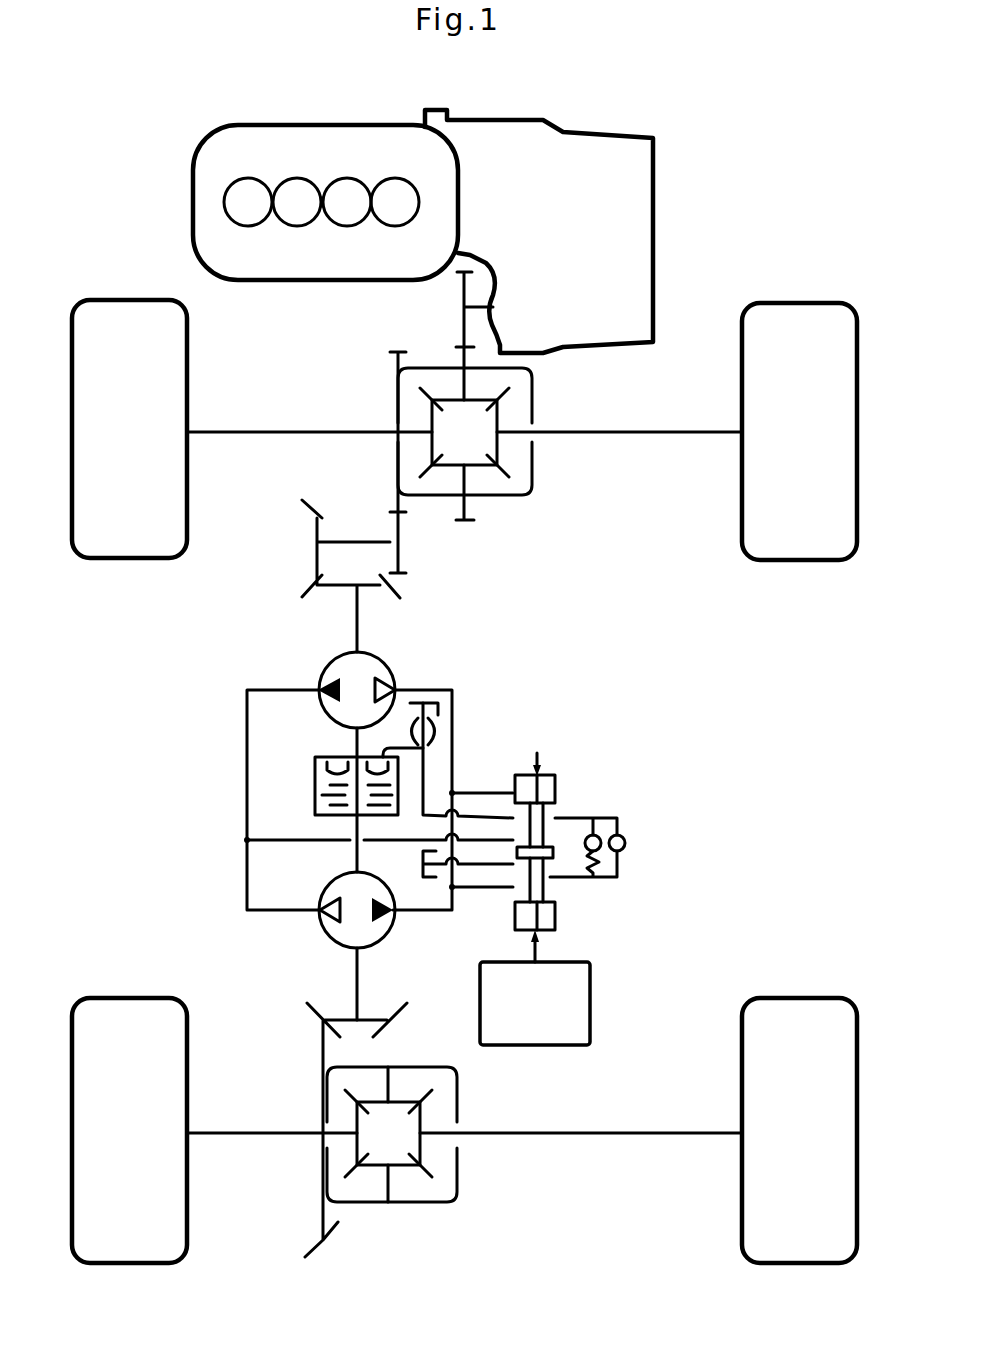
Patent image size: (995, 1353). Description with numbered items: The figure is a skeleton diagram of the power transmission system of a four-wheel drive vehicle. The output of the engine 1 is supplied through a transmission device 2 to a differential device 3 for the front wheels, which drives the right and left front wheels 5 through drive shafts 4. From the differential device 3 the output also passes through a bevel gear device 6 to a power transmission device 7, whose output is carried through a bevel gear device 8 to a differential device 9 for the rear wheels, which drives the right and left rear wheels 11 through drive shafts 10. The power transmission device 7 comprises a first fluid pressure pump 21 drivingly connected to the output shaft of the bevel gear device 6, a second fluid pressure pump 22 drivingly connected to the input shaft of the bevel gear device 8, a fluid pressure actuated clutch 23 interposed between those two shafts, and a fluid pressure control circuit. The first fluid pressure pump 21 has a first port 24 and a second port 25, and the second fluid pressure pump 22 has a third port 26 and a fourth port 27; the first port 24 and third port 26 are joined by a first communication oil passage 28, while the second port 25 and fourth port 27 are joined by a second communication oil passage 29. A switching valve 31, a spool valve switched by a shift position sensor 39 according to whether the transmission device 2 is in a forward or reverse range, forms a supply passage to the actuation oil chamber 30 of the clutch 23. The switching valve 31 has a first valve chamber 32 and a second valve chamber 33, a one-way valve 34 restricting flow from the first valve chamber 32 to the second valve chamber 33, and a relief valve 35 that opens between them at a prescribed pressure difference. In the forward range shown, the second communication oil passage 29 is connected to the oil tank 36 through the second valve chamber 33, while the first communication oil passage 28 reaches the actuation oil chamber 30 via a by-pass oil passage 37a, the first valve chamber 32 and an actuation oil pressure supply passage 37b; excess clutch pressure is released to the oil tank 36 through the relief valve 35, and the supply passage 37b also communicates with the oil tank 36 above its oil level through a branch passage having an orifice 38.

The engine 1 is at (330, 125).
The transmission device 2 is at (655, 208).
The differential device for the front wheels 3 is at (532, 402).
The drive shafts 4 is at (297, 430).
The front wheels 5 is at (138, 300).
The bevel gear device 6 is at (298, 574).
The power transmission device 7 is at (536, 712).
The bevel gear device 8 is at (400, 1029).
The differential device for the rear wheels 9 is at (458, 1110).
The drive shafts 10 is at (252, 1137).
The rear wheels 11 is at (160, 1265).
The first fluid pressure pump 21 is at (372, 653).
The second fluid pressure pump 22 is at (337, 943).
The fluid pressure actuated clutch 23 is at (315, 780).
The first port 24 is at (318, 688).
The second port 25 is at (395, 690).
The third port 26 is at (318, 913).
The fourth port 27 is at (397, 920).
The first communication oil passage 28 is at (247, 765).
The second communication oil passage 29 is at (452, 897).
The actuation oil chamber 30 is at (337, 762).
The switching valve 31 is at (585, 803).
The first valve chamber 32 is at (547, 815).
The second valve chamber 33 is at (548, 890).
The one-way valve 34 is at (626, 841).
The relief valve 35 is at (598, 852).
The oil tank 36 is at (438, 708).
The by-pass oil passage 37a is at (283, 842).
The actuation oil pressure supply passage 37b is at (423, 772).
The orifice 38 is at (432, 736).
The shift position sensor 39 is at (590, 993).